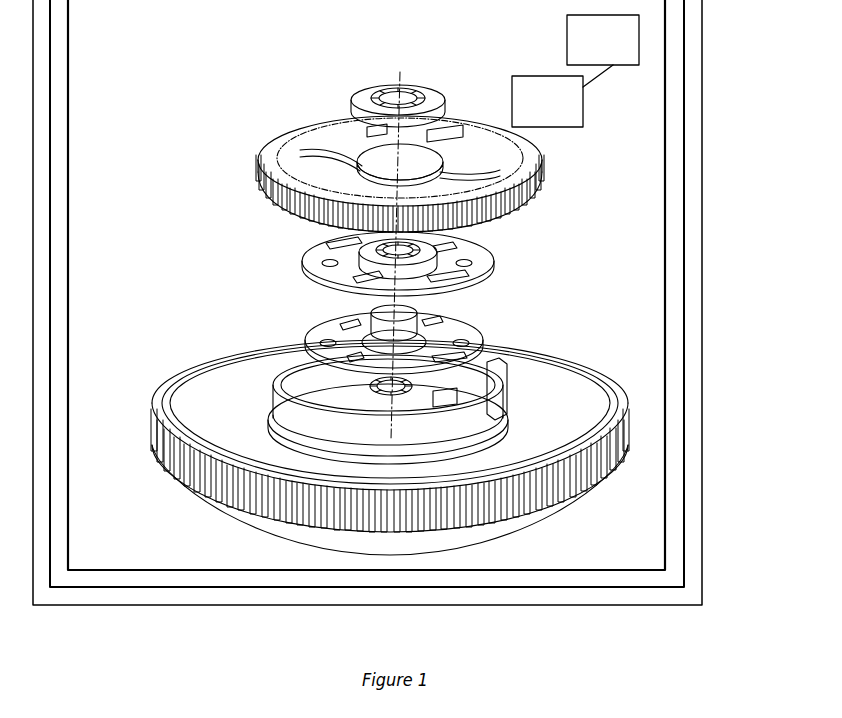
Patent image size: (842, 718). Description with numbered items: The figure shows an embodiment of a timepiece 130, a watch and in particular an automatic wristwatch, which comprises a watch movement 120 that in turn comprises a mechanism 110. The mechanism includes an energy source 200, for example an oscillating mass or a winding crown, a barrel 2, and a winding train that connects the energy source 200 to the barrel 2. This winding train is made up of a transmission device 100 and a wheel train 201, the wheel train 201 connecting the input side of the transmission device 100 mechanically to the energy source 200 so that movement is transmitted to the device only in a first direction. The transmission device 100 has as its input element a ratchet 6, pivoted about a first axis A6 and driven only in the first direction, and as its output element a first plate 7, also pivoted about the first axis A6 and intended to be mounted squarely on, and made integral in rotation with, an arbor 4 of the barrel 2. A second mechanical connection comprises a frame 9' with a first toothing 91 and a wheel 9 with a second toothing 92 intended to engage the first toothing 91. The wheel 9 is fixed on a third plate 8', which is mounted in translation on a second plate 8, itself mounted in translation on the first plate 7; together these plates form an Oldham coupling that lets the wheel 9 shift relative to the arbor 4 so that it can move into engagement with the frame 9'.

The transmission device 100 is at (203, 120).
The barrel 2 is at (175, 378).
The arbor 4 is at (400, 391).
The ratchet 6 is at (325, 142).
The first plate 7 is at (317, 375).
The second plate 8 is at (354, 307).
The third plate 8' is at (426, 281).
The wheel 9 is at (454, 246).
The frame 9' is at (436, 98).
The first toothing 91 is at (419, 97).
The second toothing 92 is at (415, 265).
The first axis A6 is at (403, 83).
The mechanism 110 is at (666, 149).
The watch movement 120 is at (685, 184).
The timepiece 130 is at (703, 212).
The energy source 200 is at (603, 51).
The wheel train 201 is at (498, 148).